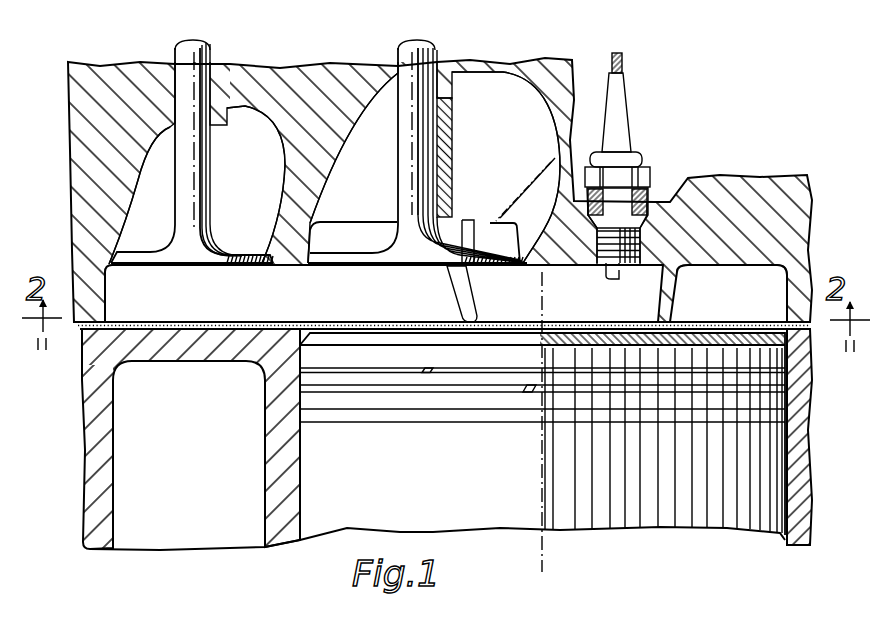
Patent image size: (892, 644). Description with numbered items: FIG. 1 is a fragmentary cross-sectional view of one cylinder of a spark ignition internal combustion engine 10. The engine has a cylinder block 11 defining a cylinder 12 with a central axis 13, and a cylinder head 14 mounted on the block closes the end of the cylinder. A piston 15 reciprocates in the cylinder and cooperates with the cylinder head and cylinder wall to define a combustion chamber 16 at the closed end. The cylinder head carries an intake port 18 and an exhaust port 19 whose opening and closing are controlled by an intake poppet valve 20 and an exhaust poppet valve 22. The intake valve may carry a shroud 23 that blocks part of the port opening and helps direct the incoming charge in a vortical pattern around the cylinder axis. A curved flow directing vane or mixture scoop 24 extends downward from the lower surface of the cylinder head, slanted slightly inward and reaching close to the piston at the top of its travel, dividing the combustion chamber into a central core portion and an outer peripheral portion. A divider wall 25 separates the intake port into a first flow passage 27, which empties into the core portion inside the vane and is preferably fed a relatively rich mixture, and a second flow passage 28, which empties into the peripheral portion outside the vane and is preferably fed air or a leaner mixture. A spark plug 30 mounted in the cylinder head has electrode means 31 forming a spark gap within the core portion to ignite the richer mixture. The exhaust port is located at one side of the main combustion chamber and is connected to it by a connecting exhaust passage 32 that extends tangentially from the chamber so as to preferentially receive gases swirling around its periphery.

The internal combustion engine 10 is at (788, 170).
The cylinder block 11 is at (805, 402).
The cylinder 12 is at (780, 510).
The central axis 13 is at (540, 458).
The cylinder head 14 is at (793, 223).
The piston 15 is at (728, 527).
The combustion chamber 16 is at (767, 278).
The intake port 18 is at (438, 112).
The exhaust port 19 is at (257, 120).
The intake poppet valve 20 is at (422, 55).
The exhaust poppet valve 22 is at (210, 53).
The shroud 23 is at (492, 232).
The curved flow directing vane 24 is at (463, 277).
The divider wall 25 is at (443, 167).
The first flow passage 27 is at (543, 147).
The second flow passage 28 is at (377, 127).
The spark plug 30 is at (625, 118).
The electrode means 31 is at (606, 278).
The connecting exhaust passage 32 is at (260, 280).